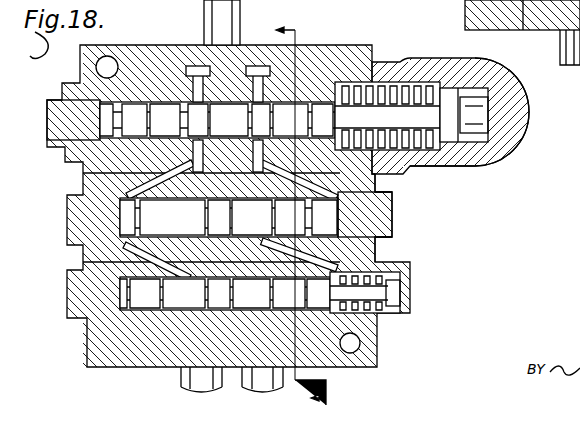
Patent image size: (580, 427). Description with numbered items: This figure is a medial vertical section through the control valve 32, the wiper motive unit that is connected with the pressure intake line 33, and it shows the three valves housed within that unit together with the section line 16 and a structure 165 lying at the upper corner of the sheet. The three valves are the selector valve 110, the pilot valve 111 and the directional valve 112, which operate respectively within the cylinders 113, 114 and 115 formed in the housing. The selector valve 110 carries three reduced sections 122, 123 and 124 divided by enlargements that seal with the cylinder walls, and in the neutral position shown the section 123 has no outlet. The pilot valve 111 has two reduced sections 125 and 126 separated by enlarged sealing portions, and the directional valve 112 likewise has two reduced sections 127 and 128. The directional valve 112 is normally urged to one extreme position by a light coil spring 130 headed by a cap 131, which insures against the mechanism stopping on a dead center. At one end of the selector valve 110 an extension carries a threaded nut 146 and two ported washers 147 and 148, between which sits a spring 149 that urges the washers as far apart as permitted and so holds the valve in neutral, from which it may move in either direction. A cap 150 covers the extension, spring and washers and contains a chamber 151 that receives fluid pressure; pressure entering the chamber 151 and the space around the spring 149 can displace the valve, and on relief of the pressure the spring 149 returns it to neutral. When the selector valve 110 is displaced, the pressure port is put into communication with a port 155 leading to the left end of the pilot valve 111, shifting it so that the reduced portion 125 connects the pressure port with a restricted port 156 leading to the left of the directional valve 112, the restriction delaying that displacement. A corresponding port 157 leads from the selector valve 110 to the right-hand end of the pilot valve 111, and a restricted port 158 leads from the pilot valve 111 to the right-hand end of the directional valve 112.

The section line 16- 16 is at (314, 216).
The control valve 32 is at (90, 351).
The pressure intake line 33 is at (240, 28).
The selector valve 110 is at (76, 121).
The pilot valve 111 is at (110, 218).
The directional valve 112 is at (105, 293).
The cylinder 113 is at (165, 106).
The cylinder 114 is at (393, 221).
The cylinder 115 is at (178, 310).
The reduced section 122 is at (170, 104).
The reduced section 123 is at (213, 44).
The reduced section 124 is at (298, 106).
The reduced section 125 is at (105, 233).
The reduced section 126 is at (378, 240).
The reduced section 127 is at (150, 307).
The reduced section 128 is at (250, 298).
The coil spring 130 is at (406, 300).
The cap 131 is at (412, 282).
The nut 146 is at (490, 114).
The ported washer 147 is at (338, 100).
The ported washer 148 is at (432, 95).
The spring 149 is at (436, 170).
The cap 150 is at (521, 143).
The chamber 151 is at (502, 148).
The port 155 is at (103, 178).
The port 156 is at (100, 260).
The port 157 is at (378, 180).
The restricted port 158 is at (381, 262).
The bracket 165 is at (523, 30).